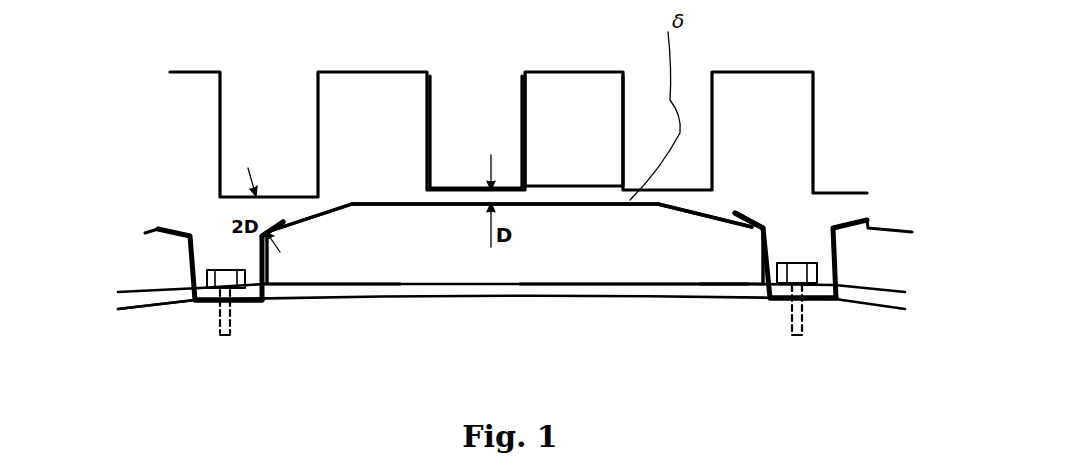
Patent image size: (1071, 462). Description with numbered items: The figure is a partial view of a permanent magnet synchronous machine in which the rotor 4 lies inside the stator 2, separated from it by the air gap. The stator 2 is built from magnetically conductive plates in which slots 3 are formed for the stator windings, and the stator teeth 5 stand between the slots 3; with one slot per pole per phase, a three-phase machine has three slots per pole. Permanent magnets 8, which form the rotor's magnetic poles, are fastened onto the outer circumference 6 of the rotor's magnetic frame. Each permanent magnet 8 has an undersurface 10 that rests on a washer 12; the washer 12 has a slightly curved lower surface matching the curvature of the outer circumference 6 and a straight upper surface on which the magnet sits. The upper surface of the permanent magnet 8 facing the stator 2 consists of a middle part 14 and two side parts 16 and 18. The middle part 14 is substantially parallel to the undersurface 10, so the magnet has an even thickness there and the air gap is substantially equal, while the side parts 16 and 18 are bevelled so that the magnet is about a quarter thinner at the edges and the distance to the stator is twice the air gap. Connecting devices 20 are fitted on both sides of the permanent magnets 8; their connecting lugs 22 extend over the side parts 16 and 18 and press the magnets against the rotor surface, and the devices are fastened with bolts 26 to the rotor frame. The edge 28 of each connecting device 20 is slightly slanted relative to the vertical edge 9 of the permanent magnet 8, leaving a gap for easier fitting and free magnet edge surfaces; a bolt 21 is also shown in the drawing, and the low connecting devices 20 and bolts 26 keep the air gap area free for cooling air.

The stator 2 is at (508, 32).
The slots 3 is at (585, 112).
The rotor 4 is at (475, 372).
The stator teeth 5 is at (472, 122).
The outer circumference of the rotor's magnetic frame 6 is at (387, 292).
The permanent magnets 8 is at (677, 248).
The vertical edge 9 is at (758, 262).
The undersurface 10 is at (307, 285).
The washer 12 is at (648, 287).
The middle part 14 is at (432, 205).
The side part 16 is at (320, 213).
The side part 18 is at (705, 213).
The connecting devices 20 is at (203, 300).
The bolt 21 is at (813, 293).
The connecting lugs 22 is at (157, 227).
The bolts 26 is at (798, 263).
The edge of the connecting device 28 is at (790, 300).